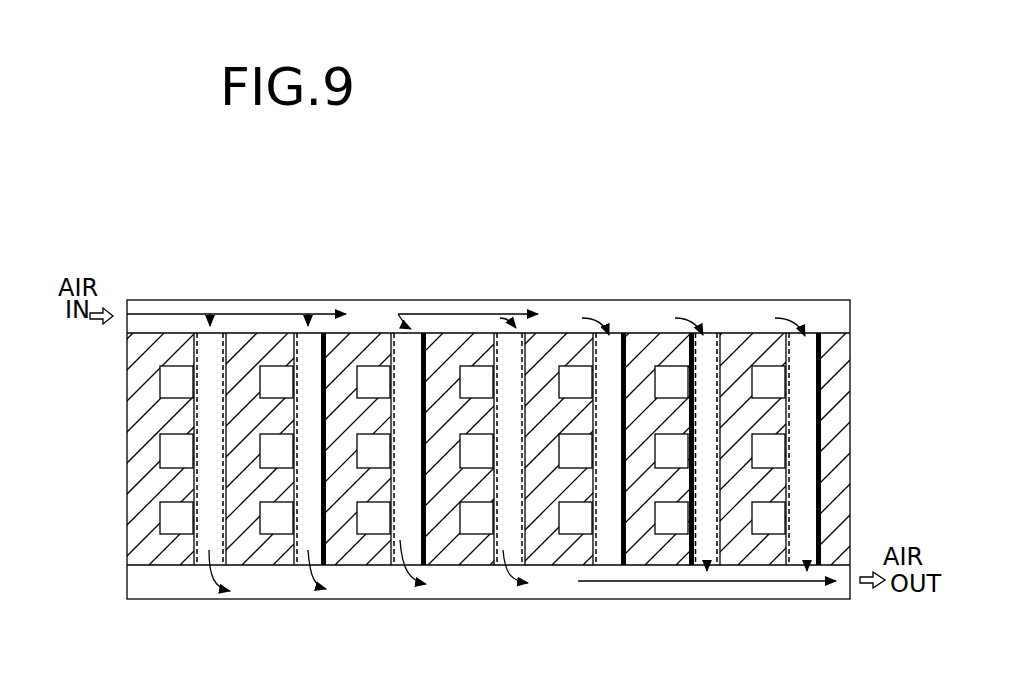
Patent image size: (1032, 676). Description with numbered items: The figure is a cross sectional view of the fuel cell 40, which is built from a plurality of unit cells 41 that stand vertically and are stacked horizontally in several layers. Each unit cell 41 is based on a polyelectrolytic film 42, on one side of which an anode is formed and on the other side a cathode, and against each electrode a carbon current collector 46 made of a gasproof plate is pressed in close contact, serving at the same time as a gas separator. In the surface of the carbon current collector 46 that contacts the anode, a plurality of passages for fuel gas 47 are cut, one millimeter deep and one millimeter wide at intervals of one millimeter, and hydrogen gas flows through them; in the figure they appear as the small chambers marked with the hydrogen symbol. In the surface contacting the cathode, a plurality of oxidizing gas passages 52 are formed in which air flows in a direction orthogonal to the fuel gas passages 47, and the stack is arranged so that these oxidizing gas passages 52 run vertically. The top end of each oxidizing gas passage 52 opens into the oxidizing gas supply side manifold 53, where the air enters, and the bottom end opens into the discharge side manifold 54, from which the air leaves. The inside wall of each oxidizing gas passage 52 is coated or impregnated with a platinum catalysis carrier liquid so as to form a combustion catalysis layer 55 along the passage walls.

The fuel cell 40 is at (593, 287).
The unit cell 41 is at (553, 574).
The polyelectrolytic film 42 is at (202, 352).
The carbon current collector 46 is at (138, 553).
The fuel gas passage 47 is at (178, 382).
The oxidizing gas passage 52 is at (810, 345).
The oxidizing gas supply side manifold 53 is at (424, 308).
The discharge side manifold 54 is at (452, 580).
The combustion catalysis layer 55 is at (220, 353).